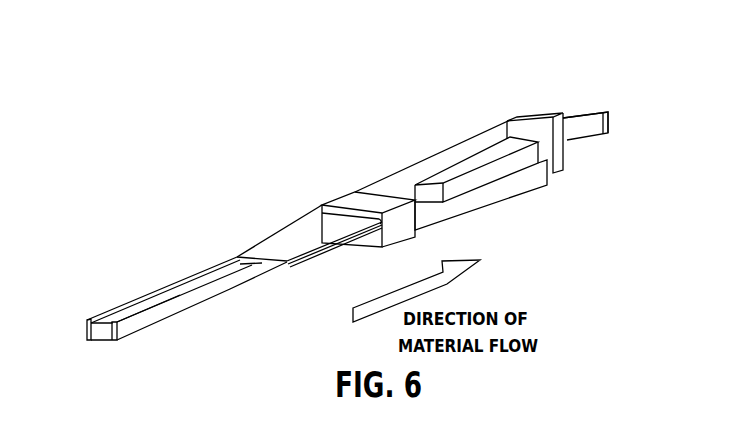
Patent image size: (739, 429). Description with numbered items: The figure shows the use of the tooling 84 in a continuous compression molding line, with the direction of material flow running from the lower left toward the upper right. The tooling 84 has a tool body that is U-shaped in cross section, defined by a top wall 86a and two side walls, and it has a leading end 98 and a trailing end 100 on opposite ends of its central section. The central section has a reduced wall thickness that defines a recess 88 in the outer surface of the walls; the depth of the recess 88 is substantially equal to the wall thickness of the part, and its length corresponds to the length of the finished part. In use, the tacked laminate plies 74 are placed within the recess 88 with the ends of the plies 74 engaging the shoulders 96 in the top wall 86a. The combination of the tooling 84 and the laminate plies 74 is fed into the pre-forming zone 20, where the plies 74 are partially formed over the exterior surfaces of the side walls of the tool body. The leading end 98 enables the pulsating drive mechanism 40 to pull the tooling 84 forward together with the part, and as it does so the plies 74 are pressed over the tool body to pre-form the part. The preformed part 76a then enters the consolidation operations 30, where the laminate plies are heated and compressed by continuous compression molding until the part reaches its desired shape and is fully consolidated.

The pre-forming zone 20 is at (350, 213).
The consolidation operations 30 is at (488, 147).
The pulsating drive mechanism 40 is at (520, 130).
The tacked laminate plies 74 is at (286, 241).
The preformed part 76a is at (408, 174).
The tooling 84 is at (187, 287).
The top wall 86a is at (106, 311).
The recess 88 is at (247, 270).
The shoulders 96 is at (226, 263).
The leading end 98 is at (583, 114).
The trailing end 100 is at (135, 310).